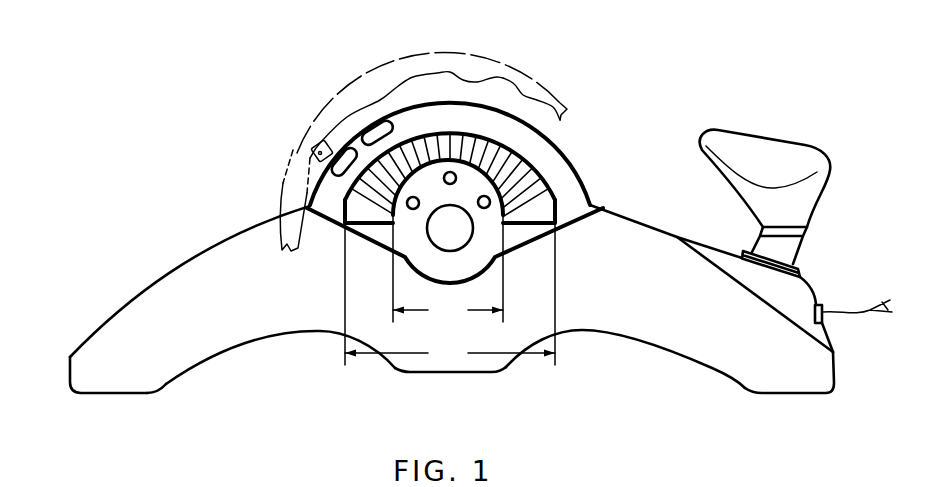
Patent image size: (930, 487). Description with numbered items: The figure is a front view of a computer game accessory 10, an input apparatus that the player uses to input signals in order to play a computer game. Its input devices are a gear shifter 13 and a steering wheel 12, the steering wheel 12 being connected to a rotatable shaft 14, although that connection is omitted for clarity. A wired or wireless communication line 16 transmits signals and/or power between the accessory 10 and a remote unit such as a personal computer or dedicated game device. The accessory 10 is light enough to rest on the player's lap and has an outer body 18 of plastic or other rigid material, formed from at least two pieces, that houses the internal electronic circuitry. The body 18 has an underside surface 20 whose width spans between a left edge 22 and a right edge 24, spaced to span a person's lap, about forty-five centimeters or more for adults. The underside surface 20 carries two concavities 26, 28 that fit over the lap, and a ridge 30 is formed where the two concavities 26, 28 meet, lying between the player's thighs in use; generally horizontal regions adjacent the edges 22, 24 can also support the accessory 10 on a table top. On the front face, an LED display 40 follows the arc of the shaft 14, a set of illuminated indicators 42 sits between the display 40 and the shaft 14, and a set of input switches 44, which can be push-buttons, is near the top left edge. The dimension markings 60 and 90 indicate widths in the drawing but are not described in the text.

The accessory 10 is at (192, 223).
The steering wheel 12 is at (285, 185).
The gear shifter 13 is at (755, 133).
The rotatable shaft 14 is at (473, 232).
The communication line 16 is at (858, 313).
The outer body 18 is at (145, 303).
The underside surface 20 is at (168, 385).
The left edge 22 is at (68, 372).
The right edge 24 is at (835, 372).
The concavity 26 is at (312, 333).
The concavity 28 is at (617, 337).
The ridge 30 is at (446, 375).
The LED display 40 is at (500, 152).
The illuminated indicators 42 is at (413, 196).
The input switches 44 is at (364, 137).
The hub width dimension 60 is at (448, 269).
The recess width dimension 90 is at (450, 295).